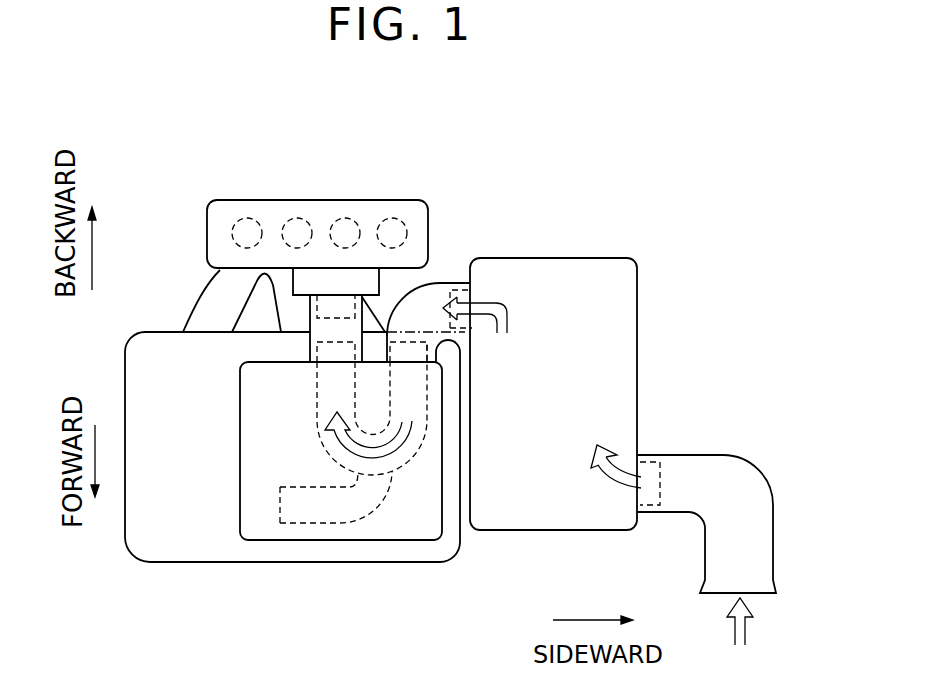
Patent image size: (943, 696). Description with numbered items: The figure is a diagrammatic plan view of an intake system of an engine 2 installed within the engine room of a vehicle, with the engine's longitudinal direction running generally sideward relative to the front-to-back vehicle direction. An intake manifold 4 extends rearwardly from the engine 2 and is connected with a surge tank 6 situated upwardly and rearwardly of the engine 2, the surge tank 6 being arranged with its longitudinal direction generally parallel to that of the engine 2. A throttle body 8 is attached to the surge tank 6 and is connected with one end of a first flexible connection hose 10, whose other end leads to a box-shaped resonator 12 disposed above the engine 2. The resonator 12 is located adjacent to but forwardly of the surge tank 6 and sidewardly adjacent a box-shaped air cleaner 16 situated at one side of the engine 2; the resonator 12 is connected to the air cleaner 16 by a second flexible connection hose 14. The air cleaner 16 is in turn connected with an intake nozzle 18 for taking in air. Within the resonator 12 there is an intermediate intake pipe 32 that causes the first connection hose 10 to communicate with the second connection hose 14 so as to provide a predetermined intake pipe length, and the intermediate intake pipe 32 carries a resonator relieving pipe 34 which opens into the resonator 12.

The engine 2 is at (153, 543).
The intake manifold 4 is at (187, 323).
The surge tank 6 is at (236, 210).
The throttle body 8 is at (362, 278).
The first flexible connection hose 10 is at (363, 297).
The resonator 12 is at (268, 544).
The second flexible connection hose 14 is at (440, 290).
The air cleaner 16 is at (607, 270).
The intake nozzle 18 is at (692, 468).
The intermediate intake pipe 32 is at (427, 440).
The resonator relieving pipe 34 is at (332, 505).